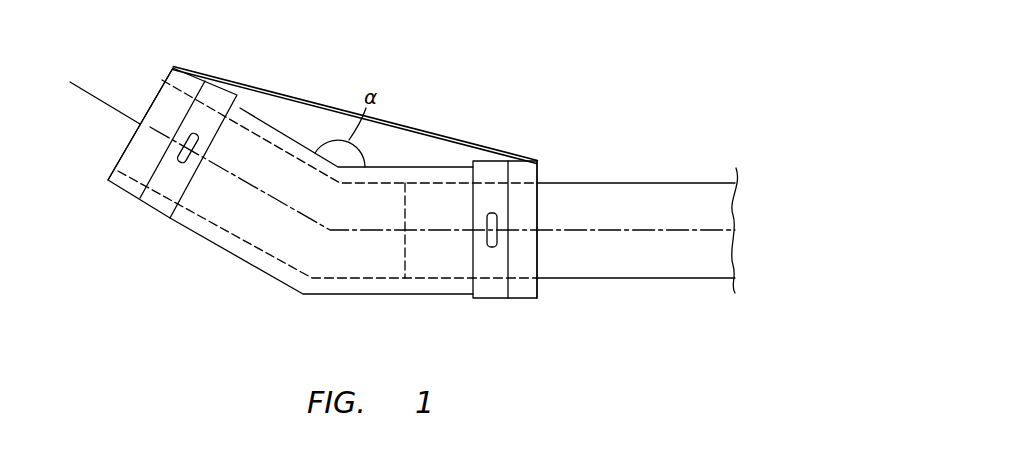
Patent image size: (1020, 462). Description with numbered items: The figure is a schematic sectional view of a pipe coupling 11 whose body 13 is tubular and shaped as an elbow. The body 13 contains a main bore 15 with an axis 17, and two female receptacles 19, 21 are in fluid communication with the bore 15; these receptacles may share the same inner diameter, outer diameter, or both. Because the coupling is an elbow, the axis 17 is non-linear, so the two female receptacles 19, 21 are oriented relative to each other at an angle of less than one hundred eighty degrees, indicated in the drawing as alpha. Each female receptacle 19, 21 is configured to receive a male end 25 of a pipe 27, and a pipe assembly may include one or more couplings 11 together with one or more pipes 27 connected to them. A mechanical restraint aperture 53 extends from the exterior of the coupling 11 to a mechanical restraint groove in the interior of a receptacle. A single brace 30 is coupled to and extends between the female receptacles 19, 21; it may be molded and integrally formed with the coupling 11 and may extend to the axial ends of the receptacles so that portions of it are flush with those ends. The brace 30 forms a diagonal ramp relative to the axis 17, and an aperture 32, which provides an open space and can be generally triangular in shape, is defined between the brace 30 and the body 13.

The pipe coupling 11 is at (606, 50).
The body 13 is at (333, 295).
The main bore 15 is at (238, 235).
The axis 17 is at (107, 104).
The female receptacle 19 is at (118, 160).
The female receptacle 21 is at (538, 266).
The male end 25 is at (405, 258).
The pipe 27 is at (623, 183).
The brace 30 is at (270, 92).
The aperture 32 is at (417, 148).
The mechanical restraint aperture 53 is at (150, 202).